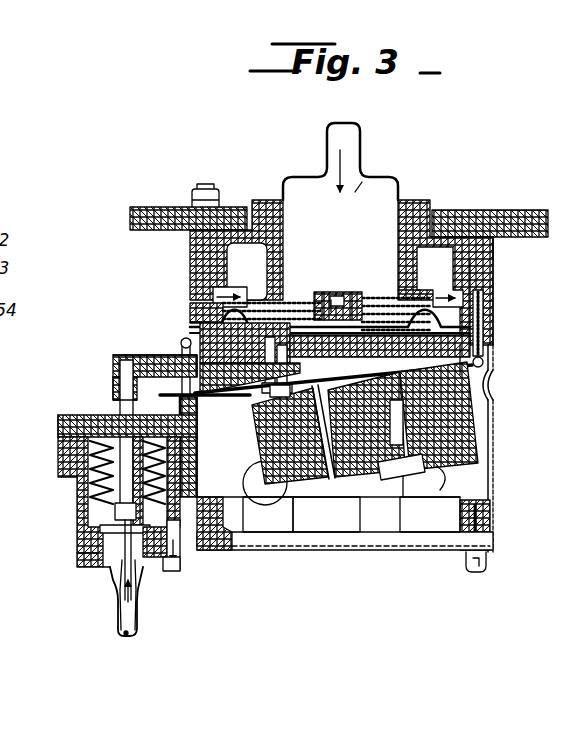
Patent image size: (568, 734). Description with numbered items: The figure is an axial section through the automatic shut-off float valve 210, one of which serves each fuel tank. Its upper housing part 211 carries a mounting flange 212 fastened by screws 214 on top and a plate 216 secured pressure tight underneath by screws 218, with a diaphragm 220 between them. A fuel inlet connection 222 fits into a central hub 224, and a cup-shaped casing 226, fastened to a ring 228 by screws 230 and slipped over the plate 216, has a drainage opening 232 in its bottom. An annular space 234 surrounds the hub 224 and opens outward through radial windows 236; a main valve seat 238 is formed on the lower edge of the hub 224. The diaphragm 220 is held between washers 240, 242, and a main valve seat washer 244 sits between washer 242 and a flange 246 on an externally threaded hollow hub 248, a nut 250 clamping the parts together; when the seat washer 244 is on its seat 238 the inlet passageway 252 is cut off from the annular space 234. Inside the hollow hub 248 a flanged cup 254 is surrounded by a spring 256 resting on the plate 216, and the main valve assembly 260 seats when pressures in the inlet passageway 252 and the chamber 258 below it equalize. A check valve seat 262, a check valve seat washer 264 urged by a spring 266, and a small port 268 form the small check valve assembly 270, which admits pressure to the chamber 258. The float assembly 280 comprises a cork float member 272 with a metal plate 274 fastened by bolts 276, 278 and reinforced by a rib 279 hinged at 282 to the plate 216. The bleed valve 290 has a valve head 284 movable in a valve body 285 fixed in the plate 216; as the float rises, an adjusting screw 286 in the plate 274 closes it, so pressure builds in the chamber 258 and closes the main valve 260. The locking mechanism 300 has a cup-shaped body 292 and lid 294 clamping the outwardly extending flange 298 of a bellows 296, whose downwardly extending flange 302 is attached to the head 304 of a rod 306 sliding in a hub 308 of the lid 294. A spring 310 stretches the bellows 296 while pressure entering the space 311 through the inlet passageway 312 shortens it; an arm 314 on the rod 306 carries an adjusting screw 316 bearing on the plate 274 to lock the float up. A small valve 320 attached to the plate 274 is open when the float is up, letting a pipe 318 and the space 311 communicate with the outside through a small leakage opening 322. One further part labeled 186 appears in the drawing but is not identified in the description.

The nozzle 186 is at (120, 612).
The automatic shut-off float valve 210 is at (296, 172).
The upper housing part 211 is at (494, 270).
The mounting flange 212 is at (485, 212).
The screws 214 is at (194, 192).
The plate 216 is at (494, 370).
The screws 218 is at (476, 314).
The diaphragm 220 is at (472, 328).
The fuel inlet connection 222 is at (362, 168).
The hub 224 is at (414, 202).
The cup-shaped casing 226 is at (496, 442).
The ring 228 is at (497, 508).
The screws 230 is at (483, 572).
The drainage opening 232 is at (332, 552).
The annular space 234 is at (447, 256).
The windows 236 is at (200, 288).
The main valve seat 238 is at (408, 292).
The washer 240 is at (200, 326).
The washer 242 is at (196, 304).
The main valve seat washer 244 is at (247, 271).
The flange 246 is at (296, 300).
The hollow hub 248 is at (396, 292).
The nut 250 is at (388, 372).
The inlet passageway 252 is at (366, 186).
The flanged cup 254 is at (337, 432).
The spring 256 is at (340, 431).
The chamber 258 is at (486, 344).
The main valve assembly 260 is at (426, 294).
The check valve seat 262 is at (351, 290).
The check valve seat washer 264 is at (330, 290).
The spring 266 is at (366, 424).
The small port 268 is at (342, 290).
The small check valve assembly 270 is at (332, 272).
The float member 272 is at (451, 470).
The metal plate 274 is at (439, 416).
The bolt 276 is at (378, 468).
The bolt 278 is at (404, 424).
The rib 279 is at (207, 447).
The float assembly 280 is at (480, 387).
The hinge 282 is at (247, 385).
The valve head 284 is at (335, 343).
The valve body 285 is at (198, 346).
The adjusting screw 286 is at (207, 447).
The bleed valve 290 is at (285, 445).
The cup-shaped body 292 is at (55, 474).
The lid 294 is at (60, 425).
The bellows 296 is at (80, 445).
The outwardly extending flange 298 is at (60, 440).
The locking mechanism 300 is at (100, 397).
The downwardly extending flange 302 is at (100, 528).
The head 304 is at (112, 572).
The rod 306 is at (114, 575).
The hub 308 is at (78, 460).
The spring 310 is at (80, 555).
The space 311 is at (80, 509).
The inlet passageway 312 is at (138, 590).
The arm 314 is at (147, 355).
The adjusting screw 316 is at (172, 346).
The pipe 318 is at (181, 568).
The small valve 320 is at (182, 556).
The small leakage opening 322 is at (216, 447).